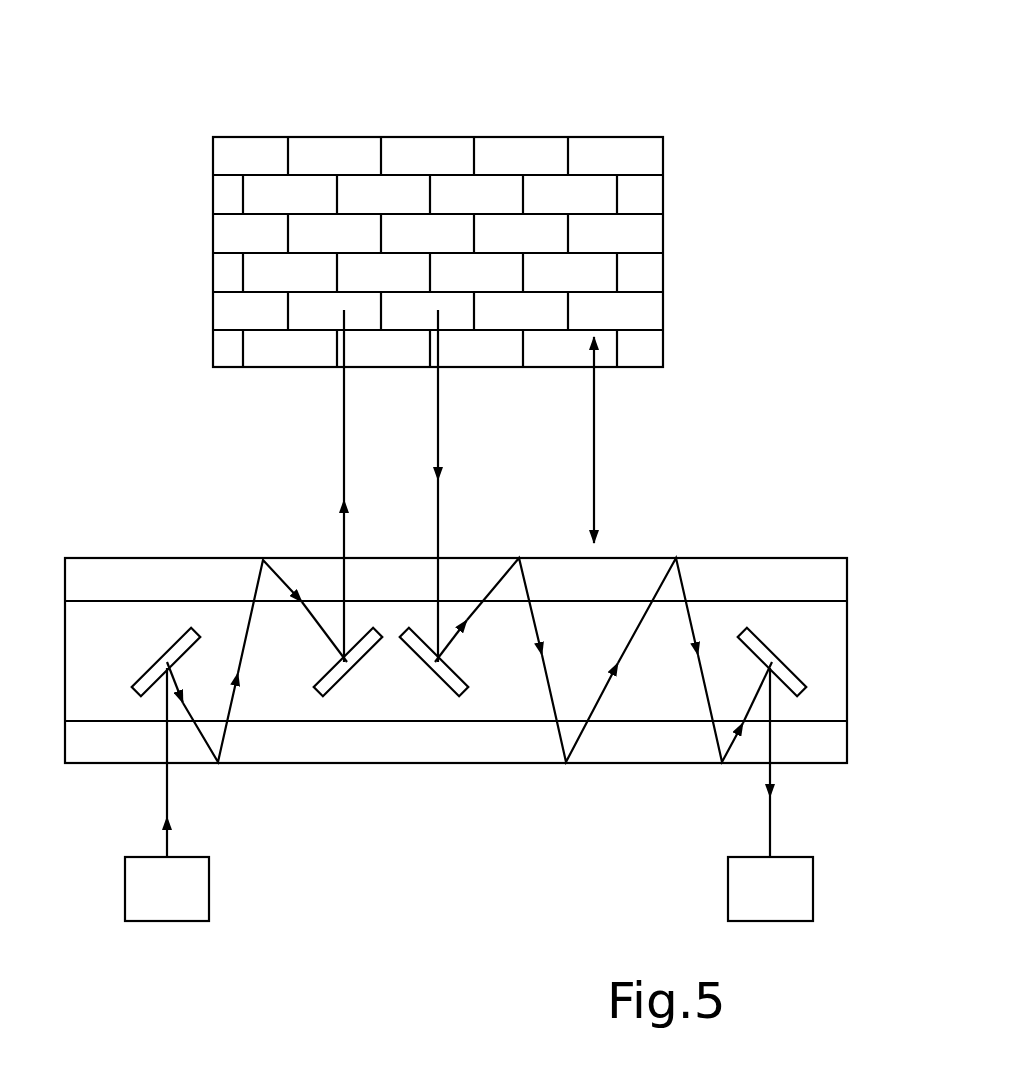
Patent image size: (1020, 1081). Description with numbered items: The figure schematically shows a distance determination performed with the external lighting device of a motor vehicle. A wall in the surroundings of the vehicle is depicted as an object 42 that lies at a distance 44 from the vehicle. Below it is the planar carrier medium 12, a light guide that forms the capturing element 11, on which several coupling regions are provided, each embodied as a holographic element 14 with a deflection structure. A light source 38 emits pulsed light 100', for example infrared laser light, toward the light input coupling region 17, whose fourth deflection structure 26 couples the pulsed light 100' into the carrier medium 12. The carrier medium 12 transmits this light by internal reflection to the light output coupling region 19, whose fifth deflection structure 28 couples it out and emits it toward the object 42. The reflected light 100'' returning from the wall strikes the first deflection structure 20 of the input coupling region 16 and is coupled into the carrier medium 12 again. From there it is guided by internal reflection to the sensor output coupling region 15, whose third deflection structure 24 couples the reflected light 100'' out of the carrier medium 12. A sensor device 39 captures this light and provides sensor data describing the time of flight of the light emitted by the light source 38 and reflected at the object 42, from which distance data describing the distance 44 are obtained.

The object 42 is at (524, 160).
The capturing element 11 is at (243, 522).
The carrier medium 12 is at (835, 580).
The holographic element 14 is at (273, 682).
The light input coupling region 17 is at (143, 720).
The sensor output coupling region 15 is at (750, 725).
The light output coupling region 19 is at (333, 600).
The input coupling region 16 is at (455, 600).
The fourth deflection structure 26 is at (168, 653).
The fifth deflection structure 28 is at (357, 675).
The first deflection structure 20 is at (428, 665).
The third deflection structure 24 is at (760, 640).
The pulsed light 100' is at (207, 583).
The reflected light 100'' is at (656, 583).
The distance 44 is at (597, 417).
The light source 38 is at (133, 888).
The sensor device 39 is at (798, 888).